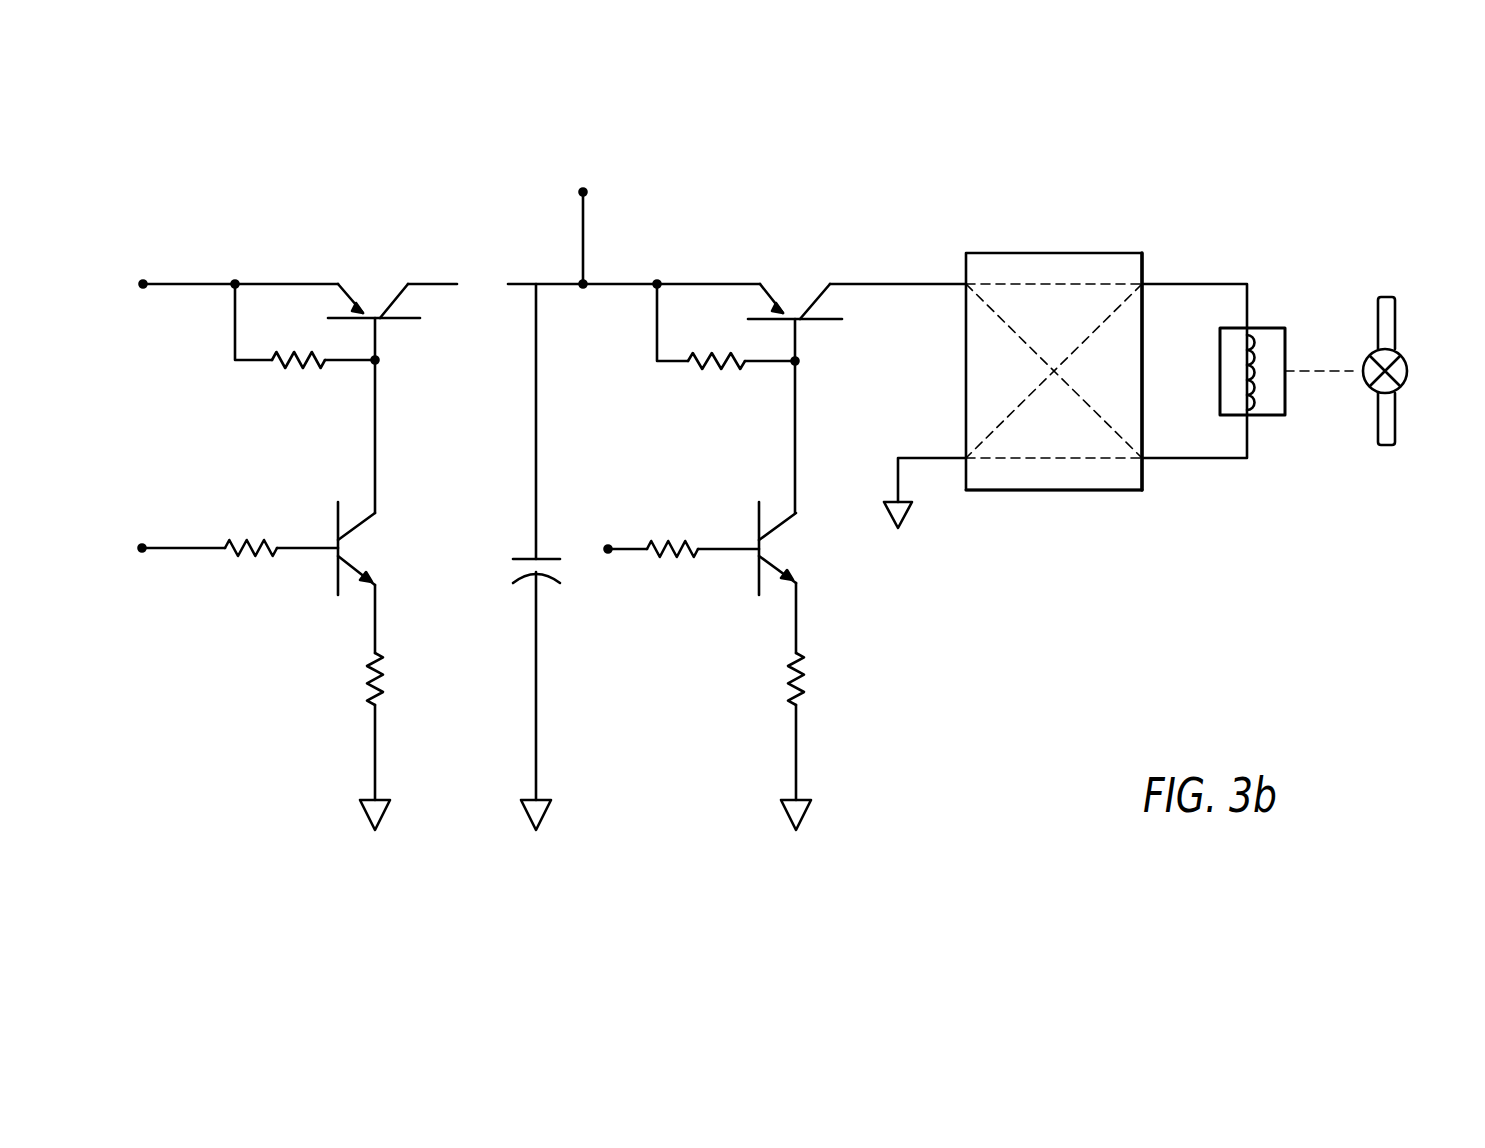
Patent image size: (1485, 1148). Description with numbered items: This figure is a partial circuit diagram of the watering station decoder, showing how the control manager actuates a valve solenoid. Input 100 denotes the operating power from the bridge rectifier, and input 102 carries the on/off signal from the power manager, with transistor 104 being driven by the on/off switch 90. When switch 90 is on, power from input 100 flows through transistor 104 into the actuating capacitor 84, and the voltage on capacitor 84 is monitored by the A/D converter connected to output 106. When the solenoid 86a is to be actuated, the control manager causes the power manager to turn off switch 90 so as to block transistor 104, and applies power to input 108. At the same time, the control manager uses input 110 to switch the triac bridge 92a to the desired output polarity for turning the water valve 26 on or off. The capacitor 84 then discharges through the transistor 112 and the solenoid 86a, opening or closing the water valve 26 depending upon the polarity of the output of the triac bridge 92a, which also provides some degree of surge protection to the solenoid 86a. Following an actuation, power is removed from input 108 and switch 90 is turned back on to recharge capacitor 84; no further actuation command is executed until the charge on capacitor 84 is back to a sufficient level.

The input 100 is at (143, 284).
The input 102 is at (142, 548).
The transistor 104 is at (372, 305).
The on/off switch 90 is at (363, 545).
The actuating capacitor 84 is at (513, 568).
The output 106 is at (583, 238).
The input 108 is at (608, 550).
The transistor 112 is at (798, 297).
The triac bridge 92a is at (1047, 265).
The input 110 is at (1080, 490).
The solenoid 86a is at (1285, 347).
The water valve 26 is at (1408, 371).